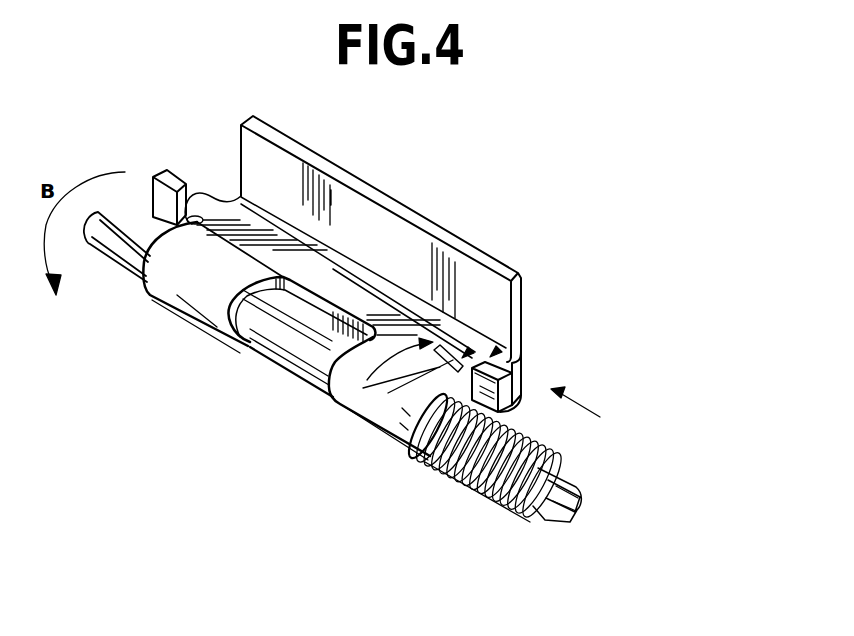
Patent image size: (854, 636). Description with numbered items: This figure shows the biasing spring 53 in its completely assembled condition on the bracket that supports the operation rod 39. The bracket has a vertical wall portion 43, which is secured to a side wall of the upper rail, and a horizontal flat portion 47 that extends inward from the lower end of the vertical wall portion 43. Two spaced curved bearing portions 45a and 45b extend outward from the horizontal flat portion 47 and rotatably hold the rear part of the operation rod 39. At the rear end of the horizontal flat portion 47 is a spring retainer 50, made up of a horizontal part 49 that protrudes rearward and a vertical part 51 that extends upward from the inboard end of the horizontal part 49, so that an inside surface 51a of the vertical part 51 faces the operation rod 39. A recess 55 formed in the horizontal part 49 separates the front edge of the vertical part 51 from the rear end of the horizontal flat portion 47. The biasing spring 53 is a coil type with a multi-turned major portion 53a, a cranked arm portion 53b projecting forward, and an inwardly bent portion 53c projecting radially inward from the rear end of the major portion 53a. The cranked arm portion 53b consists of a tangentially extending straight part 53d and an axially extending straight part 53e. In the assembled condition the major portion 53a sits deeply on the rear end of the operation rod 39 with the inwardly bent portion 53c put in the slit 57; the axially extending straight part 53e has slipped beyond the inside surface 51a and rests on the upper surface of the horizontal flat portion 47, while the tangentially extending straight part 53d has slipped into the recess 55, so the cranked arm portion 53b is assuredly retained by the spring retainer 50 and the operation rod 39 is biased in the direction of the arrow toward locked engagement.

The recess 55 is at (190, 215).
The horizontal flat portion 47 is at (327, 265).
The vertical wall portion 43 is at (455, 268).
The curved bearing portion 45a is at (153, 297).
The curved bearing portion 45b is at (360, 396).
The operation rod 39 is at (273, 347).
The horizontal part 49 is at (520, 394).
The vertical part 51 is at (520, 392).
The inside surface 51a is at (507, 387).
The cranked arm portion 53b is at (471, 350).
The spring retainer 50 is at (499, 349).
The biasing spring 53 is at (455, 483).
The multi-turned major portion 53a is at (483, 500).
The inwardly bent portion 53c is at (567, 477).
The slit 57 is at (580, 503).
The tangentially extending straight part 53d is at (405, 410).
The axially extending straight part 53e is at (388, 393).